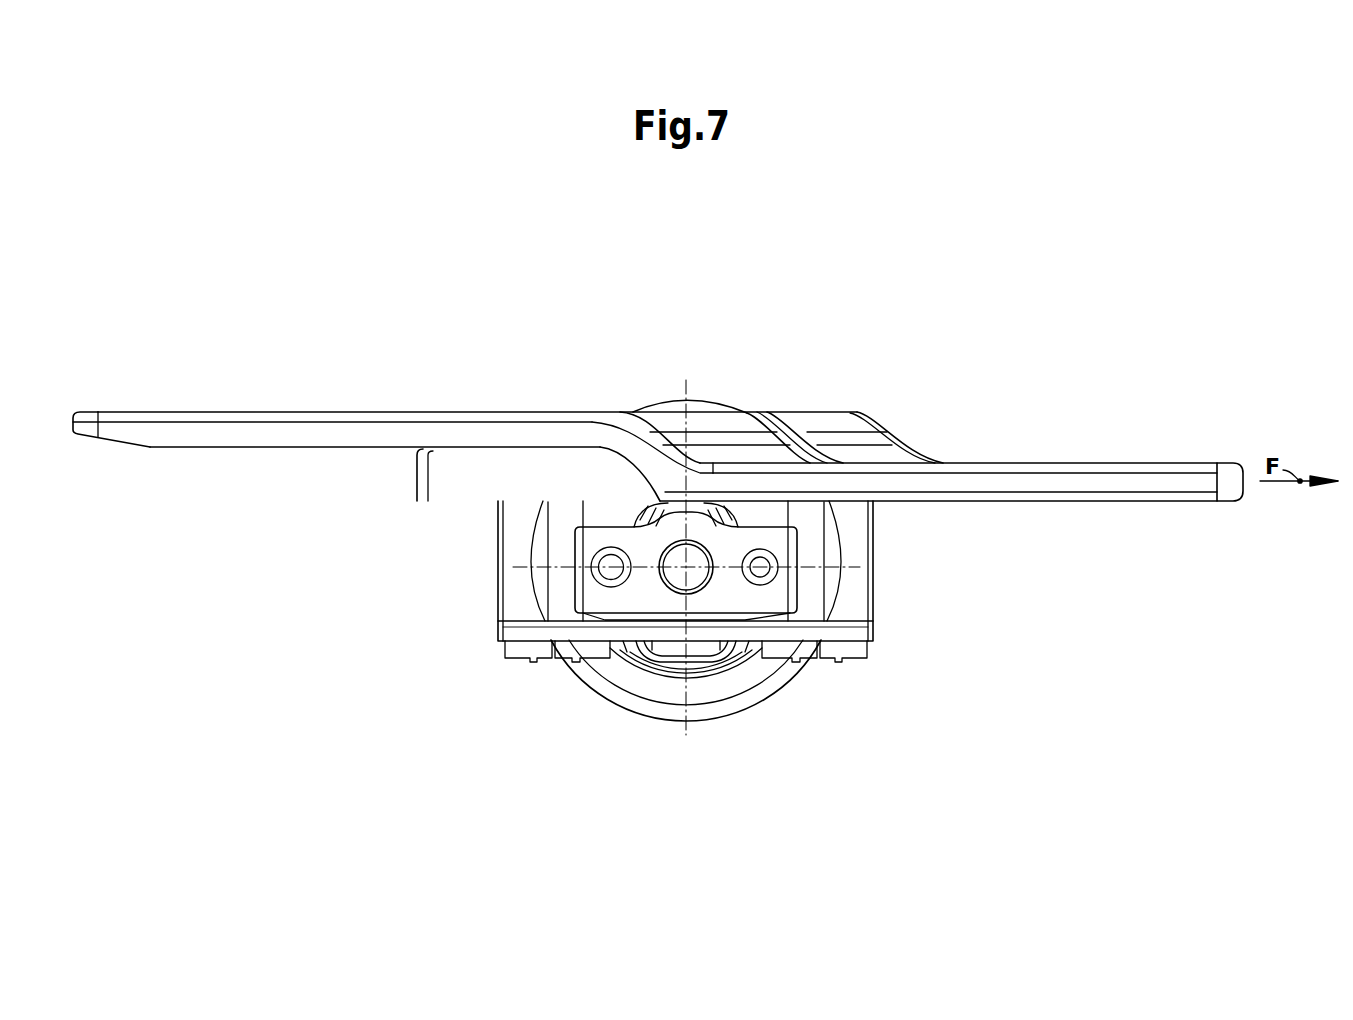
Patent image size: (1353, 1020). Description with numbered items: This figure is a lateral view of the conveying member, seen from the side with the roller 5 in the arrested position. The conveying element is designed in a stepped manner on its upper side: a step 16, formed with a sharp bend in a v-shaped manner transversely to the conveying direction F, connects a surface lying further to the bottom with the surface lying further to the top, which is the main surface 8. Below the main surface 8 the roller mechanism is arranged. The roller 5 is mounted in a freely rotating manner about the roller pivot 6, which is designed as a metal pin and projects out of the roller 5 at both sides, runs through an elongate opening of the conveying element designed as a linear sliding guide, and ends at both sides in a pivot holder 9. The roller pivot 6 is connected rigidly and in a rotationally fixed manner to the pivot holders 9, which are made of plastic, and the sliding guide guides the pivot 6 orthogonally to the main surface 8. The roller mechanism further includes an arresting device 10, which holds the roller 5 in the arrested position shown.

The roller 5 is at (636, 697).
The roller pivot 6 is at (695, 567).
The main surface 8 is at (366, 410).
The pivot holder 9 is at (785, 590).
The arresting device 10 is at (860, 632).
The step 16 is at (910, 432).